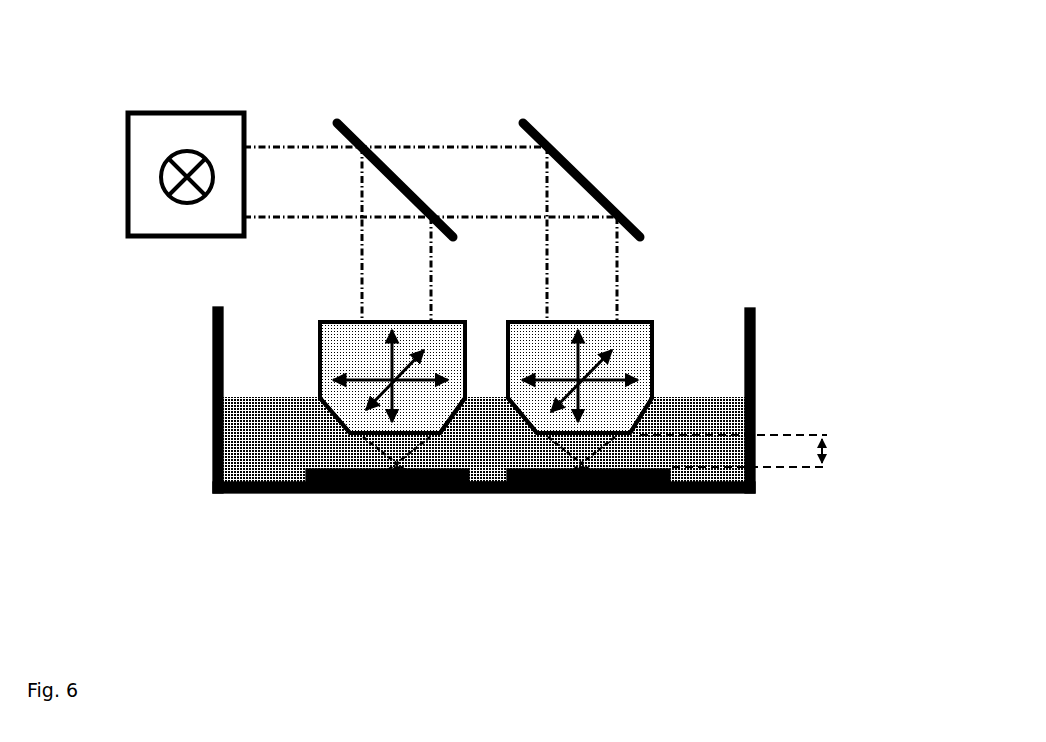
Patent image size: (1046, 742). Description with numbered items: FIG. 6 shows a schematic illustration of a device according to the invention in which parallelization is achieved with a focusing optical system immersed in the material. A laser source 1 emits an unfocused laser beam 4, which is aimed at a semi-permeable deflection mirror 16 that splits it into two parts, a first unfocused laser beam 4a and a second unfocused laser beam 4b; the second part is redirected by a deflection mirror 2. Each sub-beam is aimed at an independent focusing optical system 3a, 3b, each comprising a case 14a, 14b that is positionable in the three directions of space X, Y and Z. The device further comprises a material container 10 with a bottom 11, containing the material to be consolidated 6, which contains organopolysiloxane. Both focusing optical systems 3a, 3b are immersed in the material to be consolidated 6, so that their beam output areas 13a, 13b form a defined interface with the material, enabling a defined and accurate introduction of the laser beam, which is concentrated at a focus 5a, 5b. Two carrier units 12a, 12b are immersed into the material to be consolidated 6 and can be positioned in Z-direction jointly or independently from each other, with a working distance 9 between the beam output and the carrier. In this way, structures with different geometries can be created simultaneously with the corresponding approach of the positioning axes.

The laser source 1 is at (158, 215).
The deflection mirror 2 is at (580, 175).
The semi-permeable deflection mirror 16 is at (398, 175).
The unfocused laser beam 4 is at (300, 182).
The unfocused laser beam (first sub-beam) 4a is at (380, 275).
The unfocused laser beam (second sub-beam) 4b is at (582, 273).
The focusing optical system 3a is at (338, 337).
The focusing optical system 3b is at (623, 358).
The case 14a is at (320, 377).
The case 14b is at (653, 380).
The material container 10 is at (205, 388).
The material to be consolidated 6 is at (255, 457).
The carrier unit 12a is at (327, 493).
The carrier unit 12b is at (550, 495).
The focus 5a is at (390, 495).
The focus 5b is at (588, 495).
The beam output 13a is at (417, 495).
The beam output 13b is at (628, 495).
The bottom 11 is at (490, 495).
The working distance 9 is at (745, 451).